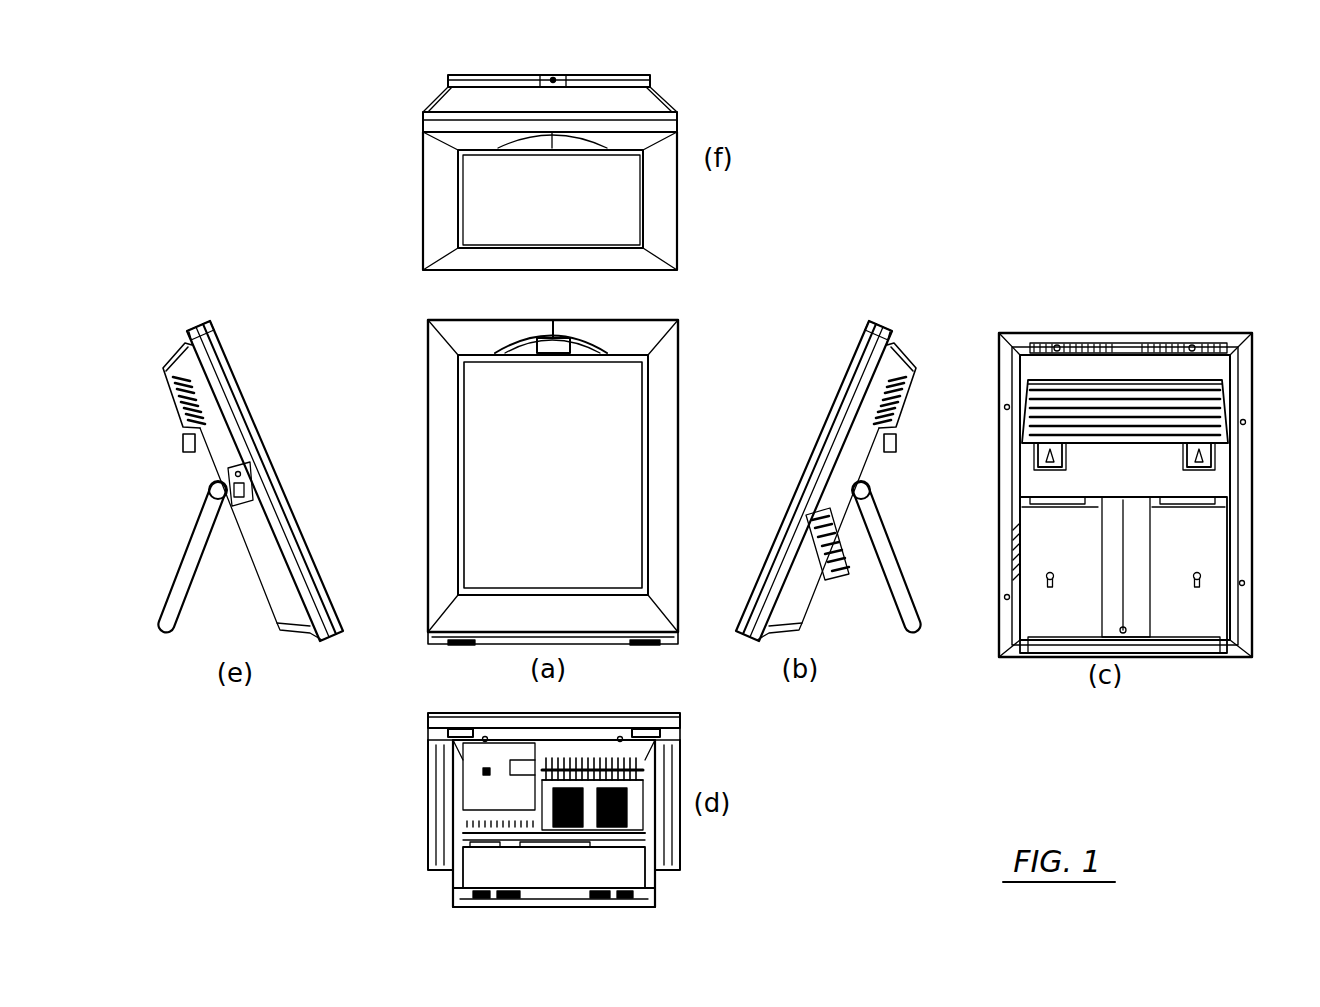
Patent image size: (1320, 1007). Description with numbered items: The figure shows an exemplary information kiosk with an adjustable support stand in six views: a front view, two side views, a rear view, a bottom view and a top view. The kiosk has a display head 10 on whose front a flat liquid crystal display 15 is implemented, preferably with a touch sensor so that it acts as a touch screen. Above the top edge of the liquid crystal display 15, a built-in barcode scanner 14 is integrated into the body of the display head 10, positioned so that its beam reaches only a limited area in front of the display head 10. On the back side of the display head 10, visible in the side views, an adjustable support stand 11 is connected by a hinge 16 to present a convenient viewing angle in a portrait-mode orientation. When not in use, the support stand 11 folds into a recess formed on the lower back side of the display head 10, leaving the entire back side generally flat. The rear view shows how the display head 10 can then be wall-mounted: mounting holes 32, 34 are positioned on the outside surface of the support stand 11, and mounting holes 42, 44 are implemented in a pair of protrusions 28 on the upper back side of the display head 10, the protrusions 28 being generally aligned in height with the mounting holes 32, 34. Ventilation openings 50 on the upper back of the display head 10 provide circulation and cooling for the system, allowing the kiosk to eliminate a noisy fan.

The display head 10 is at (693, 321).
The adjustable support stand 11 is at (894, 573).
The barcode scanner 14 is at (570, 343).
The liquid crystal display 15 is at (487, 418).
The hinge 16 is at (880, 493).
The protrusions 28 is at (183, 436).
The mounting hole 32 is at (1207, 582).
The mounting hole 34 is at (1042, 583).
The mounting hole 42 is at (1210, 470).
The mounting hole 44 is at (1037, 460).
The ventilation openings 50 is at (888, 329).